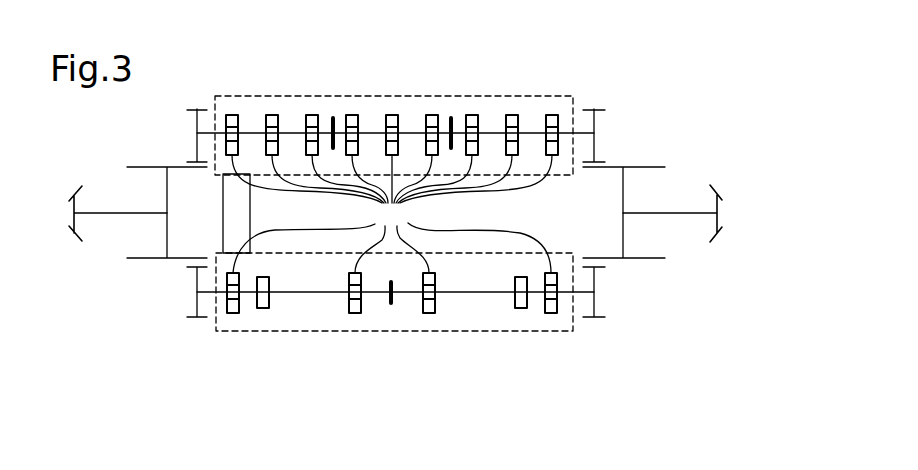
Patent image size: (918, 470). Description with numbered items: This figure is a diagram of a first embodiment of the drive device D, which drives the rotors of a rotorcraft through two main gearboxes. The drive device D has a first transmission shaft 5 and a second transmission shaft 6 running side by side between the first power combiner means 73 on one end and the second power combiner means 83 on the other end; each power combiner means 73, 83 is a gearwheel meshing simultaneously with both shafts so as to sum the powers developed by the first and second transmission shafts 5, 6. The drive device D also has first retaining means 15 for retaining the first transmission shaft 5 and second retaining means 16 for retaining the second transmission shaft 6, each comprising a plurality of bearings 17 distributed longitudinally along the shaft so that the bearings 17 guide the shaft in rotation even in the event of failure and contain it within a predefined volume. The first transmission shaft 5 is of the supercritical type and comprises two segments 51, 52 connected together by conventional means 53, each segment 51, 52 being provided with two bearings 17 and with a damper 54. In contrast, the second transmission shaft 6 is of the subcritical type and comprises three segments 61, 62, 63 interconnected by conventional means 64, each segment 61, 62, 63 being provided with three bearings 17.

The first transmission shaft 5 is at (375, 308).
The second transmission shaft 6 is at (293, 125).
The first retaining means 15 is at (567, 340).
The second retaining means 16 is at (502, 76).
The bearings 17 is at (392, 214).
The segment 51 is at (310, 292).
The segment 52 is at (472, 292).
The conventional means 53 is at (397, 299).
The damper 54 is at (262, 308).
The segment 61 is at (245, 133).
The segment 62 is at (408, 133).
The segment 63 is at (527, 133).
The conventional means 64 is at (334, 117).
The first power combiner means 73 is at (110, 213).
The second power combiner means 83 is at (697, 213).
The drive device D is at (140, 320).